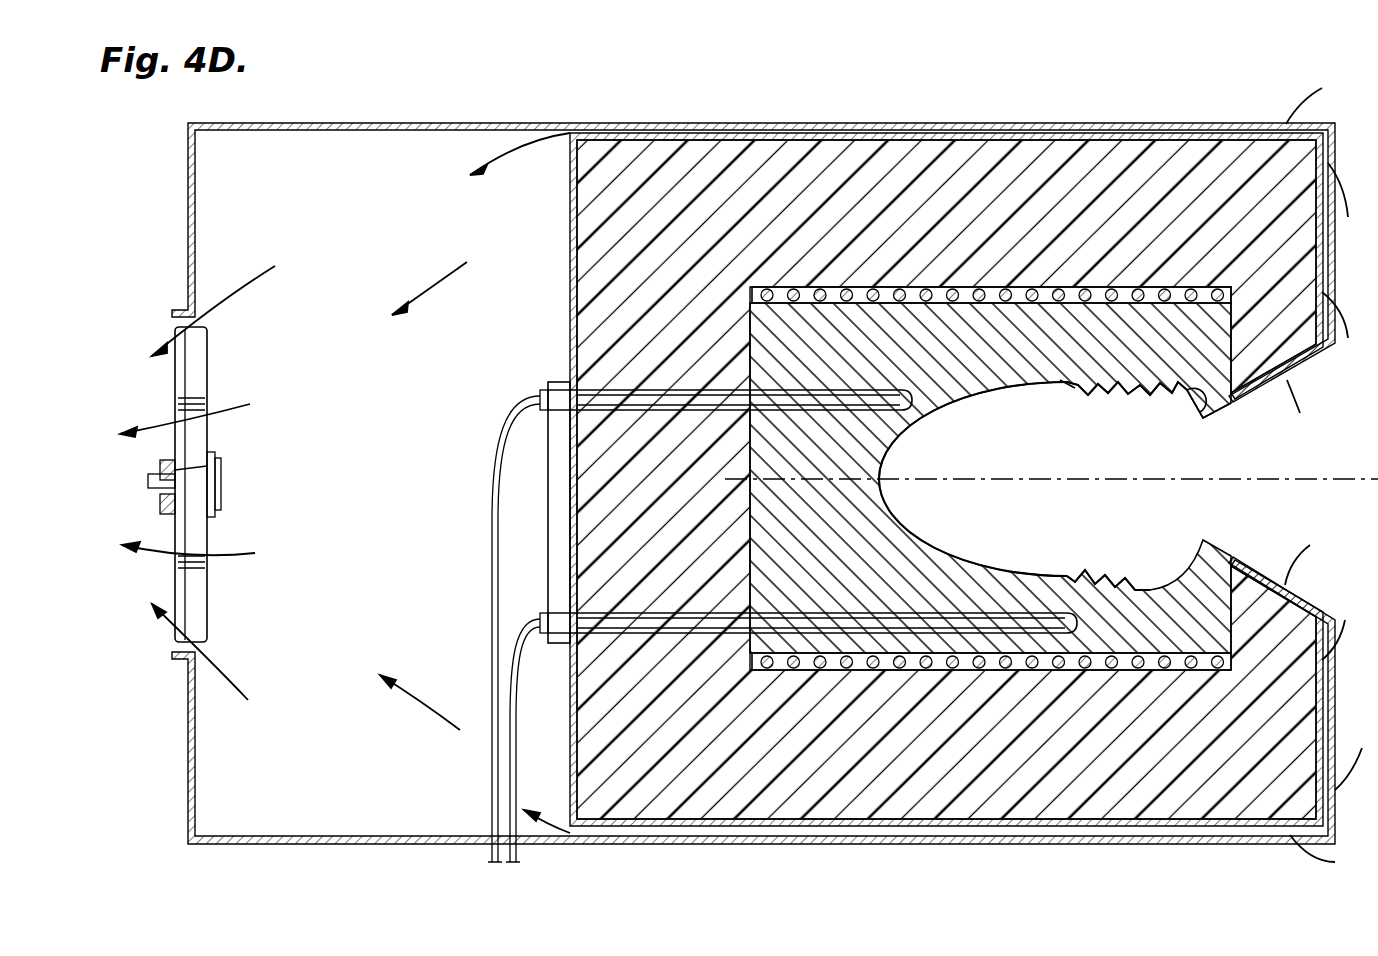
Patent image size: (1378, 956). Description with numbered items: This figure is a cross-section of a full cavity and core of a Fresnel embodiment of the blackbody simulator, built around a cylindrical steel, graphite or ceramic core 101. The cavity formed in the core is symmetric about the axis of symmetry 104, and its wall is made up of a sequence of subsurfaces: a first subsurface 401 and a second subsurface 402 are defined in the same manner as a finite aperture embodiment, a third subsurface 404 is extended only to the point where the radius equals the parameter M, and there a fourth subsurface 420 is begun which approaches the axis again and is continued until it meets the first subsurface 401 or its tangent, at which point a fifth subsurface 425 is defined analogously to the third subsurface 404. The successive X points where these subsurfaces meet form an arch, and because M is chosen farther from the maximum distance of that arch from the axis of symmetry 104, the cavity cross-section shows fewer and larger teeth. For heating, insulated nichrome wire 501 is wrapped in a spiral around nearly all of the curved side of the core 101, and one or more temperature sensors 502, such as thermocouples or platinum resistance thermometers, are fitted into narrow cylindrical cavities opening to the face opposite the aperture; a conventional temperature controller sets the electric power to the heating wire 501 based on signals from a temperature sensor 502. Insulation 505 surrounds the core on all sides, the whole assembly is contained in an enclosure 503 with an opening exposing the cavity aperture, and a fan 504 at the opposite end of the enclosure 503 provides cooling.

The core 101 is at (990, 478).
The axis of symmetry 104 is at (1132, 478).
The first subsurface 401 is at (1205, 418).
The second subsurface 402 is at (953, 388).
The third subsurface 404 is at (1050, 372).
The fourth subsurface 420 is at (1070, 365).
The fifth subsurface 425 is at (1083, 287).
The nichrome wire 501 is at (845, 287).
The temperature sensor 502 is at (690, 390).
The enclosure 503 is at (832, 123).
The fan 504 is at (158, 352).
The insulation 505 is at (946, 479).